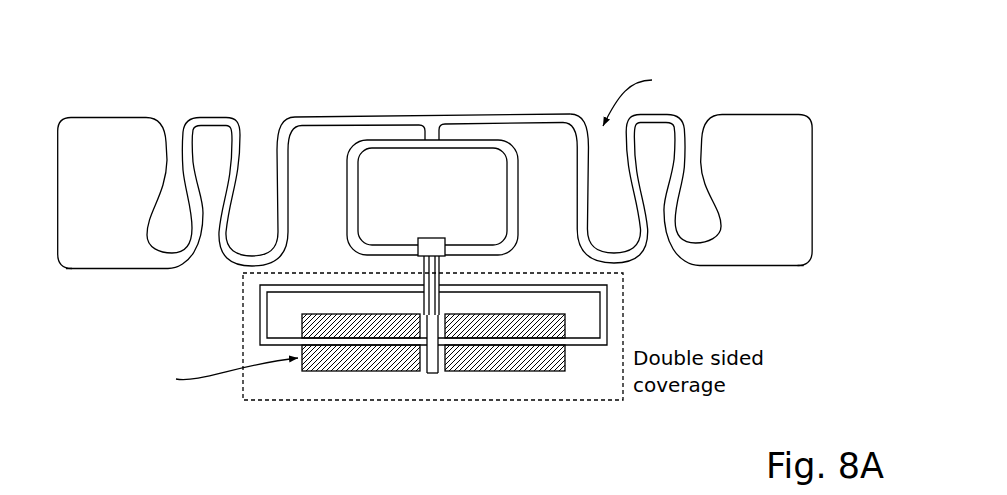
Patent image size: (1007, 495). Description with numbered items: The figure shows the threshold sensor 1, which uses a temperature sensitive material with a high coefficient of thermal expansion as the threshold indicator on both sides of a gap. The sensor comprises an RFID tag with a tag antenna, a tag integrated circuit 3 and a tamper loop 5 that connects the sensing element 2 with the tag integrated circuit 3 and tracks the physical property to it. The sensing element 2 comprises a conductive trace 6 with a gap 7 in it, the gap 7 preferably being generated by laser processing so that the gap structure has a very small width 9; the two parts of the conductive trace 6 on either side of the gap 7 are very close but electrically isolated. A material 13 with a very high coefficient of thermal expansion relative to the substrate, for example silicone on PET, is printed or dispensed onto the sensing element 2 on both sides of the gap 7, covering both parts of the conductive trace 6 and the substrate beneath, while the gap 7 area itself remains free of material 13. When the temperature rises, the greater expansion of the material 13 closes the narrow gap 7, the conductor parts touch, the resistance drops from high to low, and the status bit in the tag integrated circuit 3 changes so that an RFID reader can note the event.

The threshold sensor 1 is at (777, 52).
The sensing element 2 is at (466, 384).
The tag integrated circuit 3 is at (428, 233).
The tamper loop 5 is at (325, 402).
The conductive trace 6 is at (609, 302).
The gap 7 is at (432, 378).
The width 9 is at (436, 314).
The material 13 is at (301, 317).